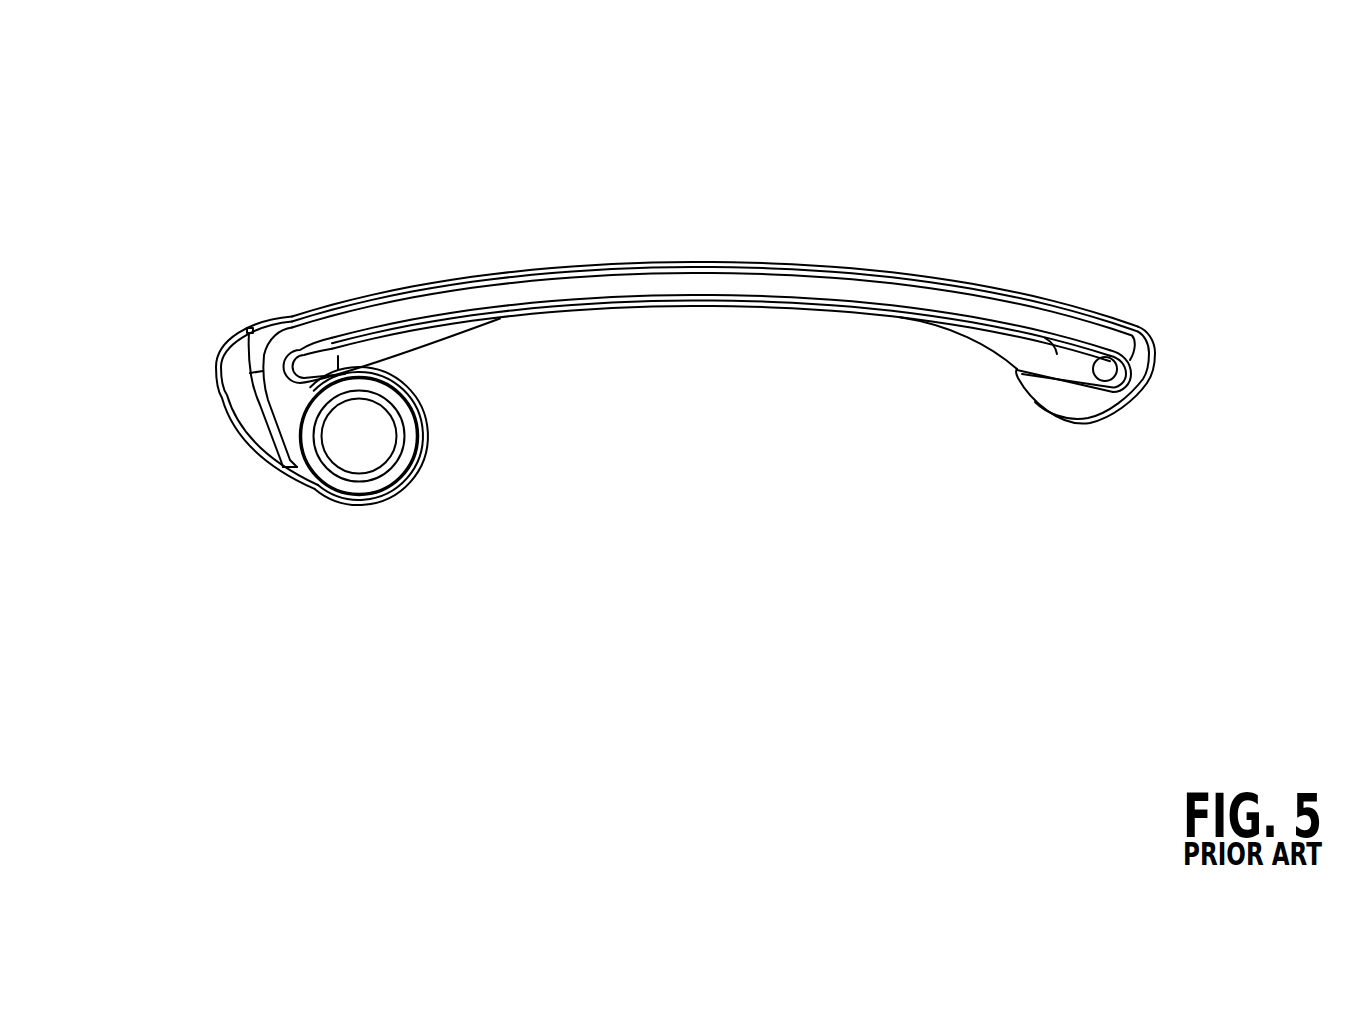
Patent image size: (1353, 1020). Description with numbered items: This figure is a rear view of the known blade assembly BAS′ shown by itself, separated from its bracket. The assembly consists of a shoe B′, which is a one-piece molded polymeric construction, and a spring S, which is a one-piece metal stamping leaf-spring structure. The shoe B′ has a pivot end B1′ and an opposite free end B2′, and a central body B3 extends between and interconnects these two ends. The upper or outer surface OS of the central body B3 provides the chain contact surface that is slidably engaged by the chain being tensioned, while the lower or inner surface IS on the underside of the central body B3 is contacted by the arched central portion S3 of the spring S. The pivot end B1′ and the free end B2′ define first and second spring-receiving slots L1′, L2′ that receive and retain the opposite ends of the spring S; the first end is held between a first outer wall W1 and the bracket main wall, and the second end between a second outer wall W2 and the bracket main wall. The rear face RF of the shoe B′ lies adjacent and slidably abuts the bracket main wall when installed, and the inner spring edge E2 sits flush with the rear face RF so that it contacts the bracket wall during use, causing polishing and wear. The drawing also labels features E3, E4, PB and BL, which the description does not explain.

The blade assembly BAS′ is at (612, 162).
The shoe B′ is at (480, 293).
The central body B3 is at (705, 275).
The outer surface OS is at (848, 268).
The rear face RF is at (547, 288).
The inner surface IS is at (400, 332).
The arched central portion S3 is at (700, 305).
The inner spring edge E2 is at (752, 305).
The spring S is at (962, 336).
The pivot end B1′ is at (287, 393).
The edge E3 is at (288, 395).
The first spring-receiving slot L1′ is at (342, 342).
The first outer wall W1 is at (290, 364).
The free end B2′ is at (1147, 337).
The edge E4 is at (1156, 393).
The second spring-receiving slot L2′ is at (997, 364).
The second outer wall W2 is at (1076, 358).
The pivot bolt PB is at (338, 458).
The bushing BL is at (411, 494).